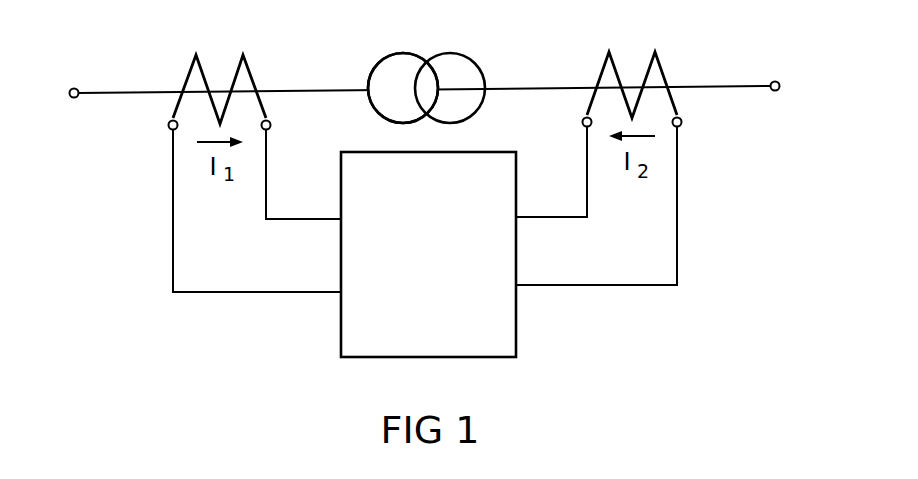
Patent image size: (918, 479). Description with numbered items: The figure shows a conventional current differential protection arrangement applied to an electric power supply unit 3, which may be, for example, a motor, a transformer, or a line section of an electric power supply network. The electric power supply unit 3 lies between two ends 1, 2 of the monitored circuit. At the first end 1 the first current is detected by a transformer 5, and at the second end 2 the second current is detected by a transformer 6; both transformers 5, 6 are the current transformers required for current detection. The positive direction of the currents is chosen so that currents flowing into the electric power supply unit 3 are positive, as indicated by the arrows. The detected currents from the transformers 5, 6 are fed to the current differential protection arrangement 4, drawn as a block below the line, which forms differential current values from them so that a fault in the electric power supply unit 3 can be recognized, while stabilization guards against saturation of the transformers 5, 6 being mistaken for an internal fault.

The end 1 is at (74, 86).
The end 2 is at (775, 79).
The electric power supply unit 3 is at (425, 53).
The current differential protection arrangement 4 is at (508, 324).
The transformer 5 is at (218, 62).
The transformer 6 is at (632, 58).